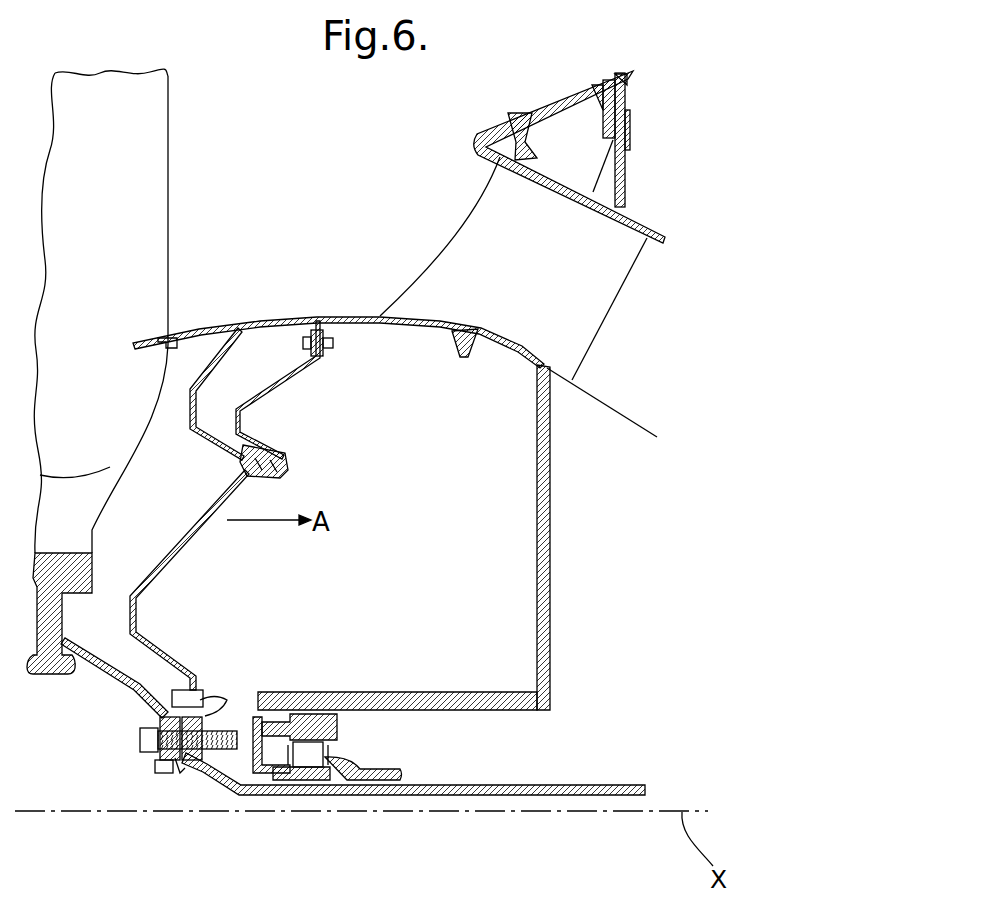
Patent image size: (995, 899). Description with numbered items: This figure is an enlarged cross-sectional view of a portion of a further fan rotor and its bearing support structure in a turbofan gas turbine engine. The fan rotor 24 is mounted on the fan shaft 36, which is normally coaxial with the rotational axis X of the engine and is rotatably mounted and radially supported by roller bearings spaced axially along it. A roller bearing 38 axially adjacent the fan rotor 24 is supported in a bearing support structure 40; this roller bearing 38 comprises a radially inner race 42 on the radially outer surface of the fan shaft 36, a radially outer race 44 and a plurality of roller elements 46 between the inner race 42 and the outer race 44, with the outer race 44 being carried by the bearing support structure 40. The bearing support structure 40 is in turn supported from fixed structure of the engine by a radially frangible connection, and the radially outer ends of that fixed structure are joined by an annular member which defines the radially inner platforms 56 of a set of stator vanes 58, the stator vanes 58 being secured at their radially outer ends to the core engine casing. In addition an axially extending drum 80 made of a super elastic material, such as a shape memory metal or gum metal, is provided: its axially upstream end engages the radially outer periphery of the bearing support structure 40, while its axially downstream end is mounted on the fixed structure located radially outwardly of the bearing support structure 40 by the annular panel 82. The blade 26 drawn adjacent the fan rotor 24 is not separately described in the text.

The fan rotor 24 is at (73, 576).
The turbine blade 26 is at (140, 249).
The fan shaft 36 is at (128, 690).
The roller bearing 38 is at (353, 770).
The bearing support structure 40 is at (304, 720).
The radially inner race 42 is at (308, 774).
The radially outer race 44 is at (292, 730).
The roller elements 46 is at (288, 768).
The radially inner platforms 56 is at (507, 353).
The stator vanes 58 is at (587, 293).
The axially extending drum 80 is at (450, 693).
The annular panel 82 is at (550, 617).